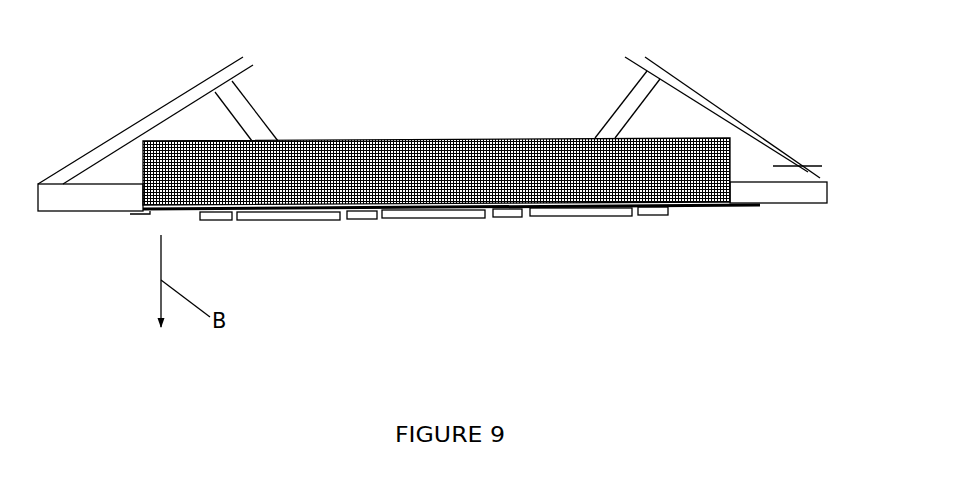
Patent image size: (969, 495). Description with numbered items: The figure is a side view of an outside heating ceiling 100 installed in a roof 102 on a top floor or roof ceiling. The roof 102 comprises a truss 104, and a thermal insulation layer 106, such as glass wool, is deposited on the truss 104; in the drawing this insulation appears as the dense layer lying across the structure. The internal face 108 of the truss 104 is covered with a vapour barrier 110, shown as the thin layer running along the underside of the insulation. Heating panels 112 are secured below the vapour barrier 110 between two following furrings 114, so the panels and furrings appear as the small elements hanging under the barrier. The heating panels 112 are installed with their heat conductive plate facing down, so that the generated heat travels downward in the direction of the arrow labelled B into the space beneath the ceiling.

The outside heating ceiling 100 is at (779, 64).
The roof 102 is at (205, 90).
The truss 104 is at (765, 192).
The thermal insulation layer 106 is at (690, 163).
The internal face 108 is at (88, 219).
The vapour barrier 110 is at (707, 205).
The heating panels 112 is at (570, 213).
The furrings 114 is at (647, 212).